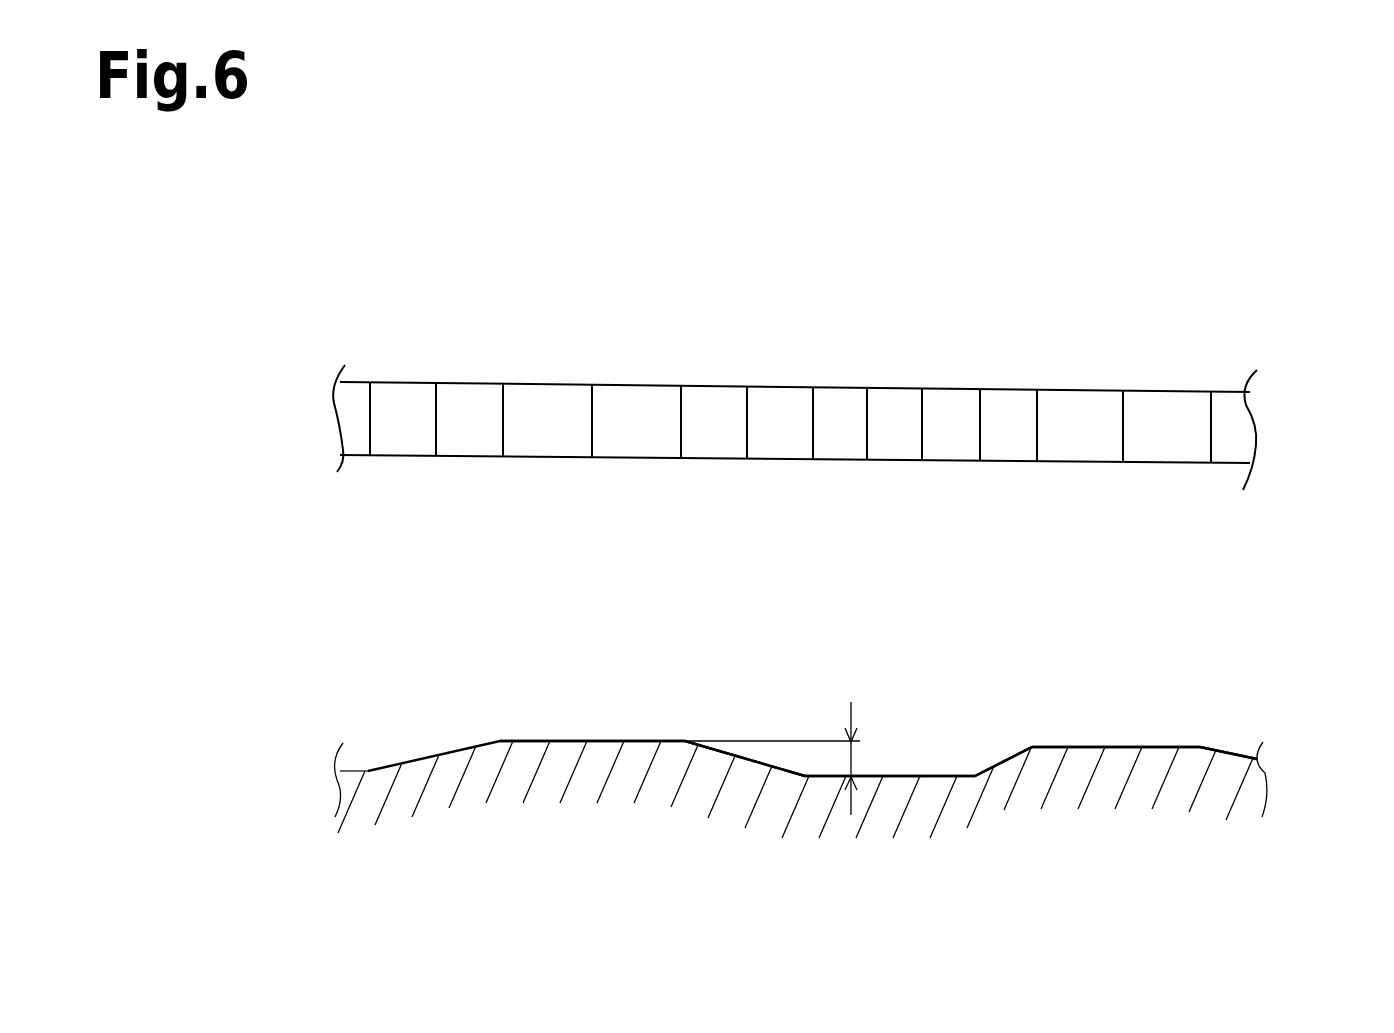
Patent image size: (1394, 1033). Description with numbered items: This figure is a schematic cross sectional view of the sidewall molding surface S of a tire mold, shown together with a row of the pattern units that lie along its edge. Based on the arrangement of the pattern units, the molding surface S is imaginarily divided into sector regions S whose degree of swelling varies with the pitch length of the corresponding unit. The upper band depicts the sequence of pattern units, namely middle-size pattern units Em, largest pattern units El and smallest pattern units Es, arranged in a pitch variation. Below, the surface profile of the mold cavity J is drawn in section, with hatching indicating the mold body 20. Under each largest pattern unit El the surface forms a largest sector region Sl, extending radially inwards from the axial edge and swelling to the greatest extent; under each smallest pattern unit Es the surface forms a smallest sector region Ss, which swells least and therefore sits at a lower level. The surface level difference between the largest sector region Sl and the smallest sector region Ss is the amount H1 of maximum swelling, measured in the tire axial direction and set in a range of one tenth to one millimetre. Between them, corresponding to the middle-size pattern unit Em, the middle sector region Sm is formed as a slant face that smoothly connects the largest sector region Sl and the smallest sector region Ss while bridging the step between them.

The tire tread rubber / ground contact surface 20 is at (1200, 776).
The sector region S is at (1200, 745).
The largest sector region Sl is at (603, 741).
The middle sector region Sm is at (775, 773).
The smallest sector region Ss is at (900, 777).
The amount of maximum swelling H1 is at (852, 760).
The mold cavity J is at (852, 612).
The middle-size pattern unit Em is at (705, 421).
The largest pattern unit El is at (857, 423).
The smallest pattern unit Es is at (895, 423).